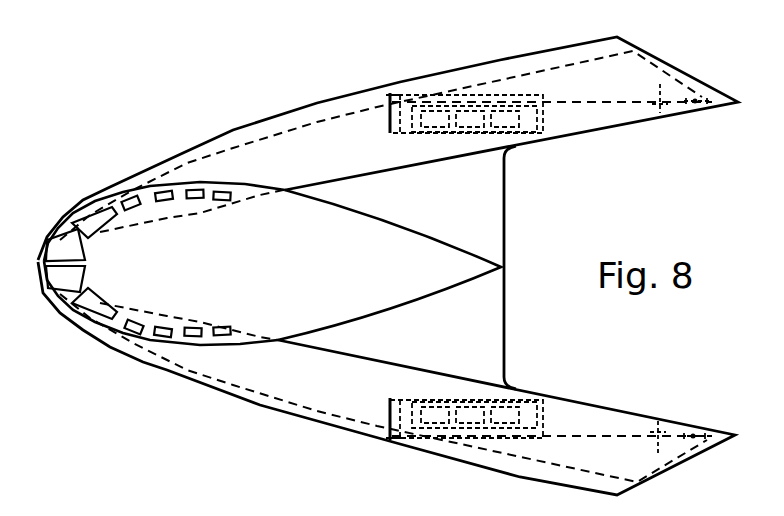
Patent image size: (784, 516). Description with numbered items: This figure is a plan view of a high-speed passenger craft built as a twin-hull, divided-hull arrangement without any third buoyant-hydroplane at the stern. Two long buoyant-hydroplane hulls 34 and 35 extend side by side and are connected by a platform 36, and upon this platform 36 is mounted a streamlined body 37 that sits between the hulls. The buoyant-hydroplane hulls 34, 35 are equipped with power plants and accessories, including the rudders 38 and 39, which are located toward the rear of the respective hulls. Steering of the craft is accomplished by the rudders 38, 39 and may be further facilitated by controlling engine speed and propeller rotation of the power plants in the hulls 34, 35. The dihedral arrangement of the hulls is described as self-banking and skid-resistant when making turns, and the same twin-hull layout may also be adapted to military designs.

The buoyant-hydroplane hull 34 is at (388, 148).
The buoyant-hydroplane hull 35 is at (386, 378).
The platform 36 is at (482, 267).
The streamlined body 37 is at (272, 263).
The rudder 38 is at (697, 434).
The rudder 39 is at (701, 99).